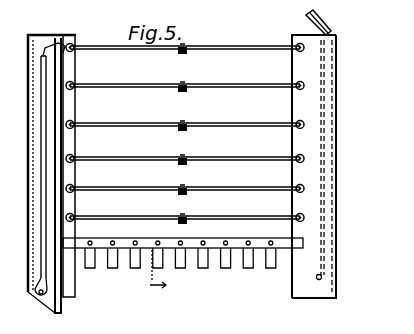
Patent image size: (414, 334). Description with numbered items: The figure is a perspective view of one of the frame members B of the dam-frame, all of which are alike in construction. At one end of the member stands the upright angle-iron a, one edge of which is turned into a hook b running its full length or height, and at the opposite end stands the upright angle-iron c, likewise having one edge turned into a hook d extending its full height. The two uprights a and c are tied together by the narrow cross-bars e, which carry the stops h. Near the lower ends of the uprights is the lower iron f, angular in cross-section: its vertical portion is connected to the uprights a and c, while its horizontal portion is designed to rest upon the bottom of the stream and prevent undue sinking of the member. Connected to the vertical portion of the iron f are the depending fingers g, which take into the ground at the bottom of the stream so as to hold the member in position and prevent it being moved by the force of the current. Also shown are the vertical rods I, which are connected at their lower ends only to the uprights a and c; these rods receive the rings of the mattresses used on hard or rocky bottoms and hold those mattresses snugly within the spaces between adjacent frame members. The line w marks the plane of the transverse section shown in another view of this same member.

The vertical rod I is at (31, 93).
The frame member B is at (185, 122).
The stop h is at (186, 92).
The cross-bar e is at (237, 160).
The section line w is at (155, 264).
The lower iron f is at (240, 240).
The depending finger g is at (247, 257).
The upright angle-iron a is at (50, 298).
The hook b is at (65, 302).
The upright angle-iron c is at (310, 288).
The hook d is at (318, 15).